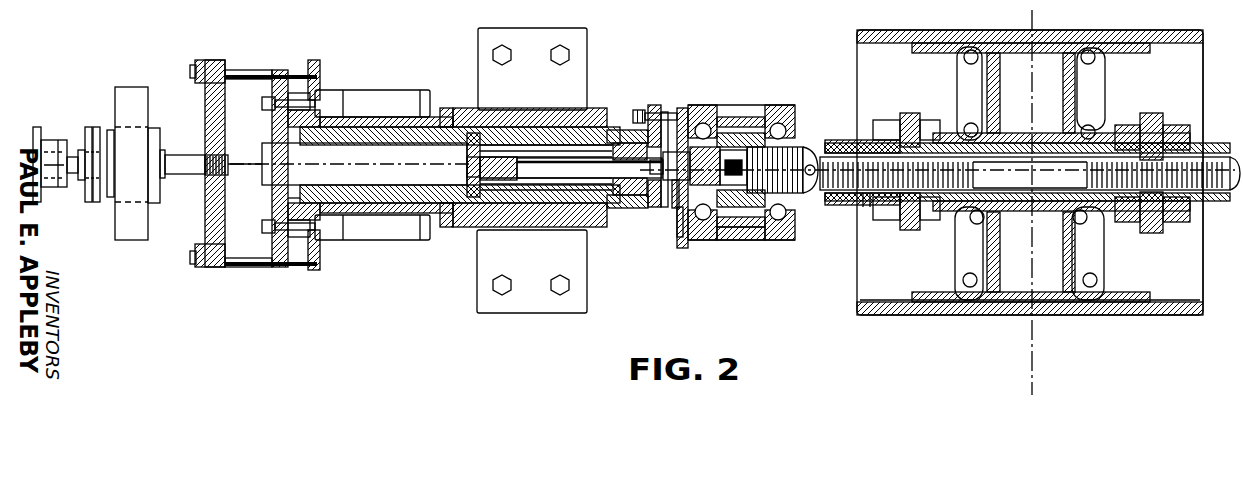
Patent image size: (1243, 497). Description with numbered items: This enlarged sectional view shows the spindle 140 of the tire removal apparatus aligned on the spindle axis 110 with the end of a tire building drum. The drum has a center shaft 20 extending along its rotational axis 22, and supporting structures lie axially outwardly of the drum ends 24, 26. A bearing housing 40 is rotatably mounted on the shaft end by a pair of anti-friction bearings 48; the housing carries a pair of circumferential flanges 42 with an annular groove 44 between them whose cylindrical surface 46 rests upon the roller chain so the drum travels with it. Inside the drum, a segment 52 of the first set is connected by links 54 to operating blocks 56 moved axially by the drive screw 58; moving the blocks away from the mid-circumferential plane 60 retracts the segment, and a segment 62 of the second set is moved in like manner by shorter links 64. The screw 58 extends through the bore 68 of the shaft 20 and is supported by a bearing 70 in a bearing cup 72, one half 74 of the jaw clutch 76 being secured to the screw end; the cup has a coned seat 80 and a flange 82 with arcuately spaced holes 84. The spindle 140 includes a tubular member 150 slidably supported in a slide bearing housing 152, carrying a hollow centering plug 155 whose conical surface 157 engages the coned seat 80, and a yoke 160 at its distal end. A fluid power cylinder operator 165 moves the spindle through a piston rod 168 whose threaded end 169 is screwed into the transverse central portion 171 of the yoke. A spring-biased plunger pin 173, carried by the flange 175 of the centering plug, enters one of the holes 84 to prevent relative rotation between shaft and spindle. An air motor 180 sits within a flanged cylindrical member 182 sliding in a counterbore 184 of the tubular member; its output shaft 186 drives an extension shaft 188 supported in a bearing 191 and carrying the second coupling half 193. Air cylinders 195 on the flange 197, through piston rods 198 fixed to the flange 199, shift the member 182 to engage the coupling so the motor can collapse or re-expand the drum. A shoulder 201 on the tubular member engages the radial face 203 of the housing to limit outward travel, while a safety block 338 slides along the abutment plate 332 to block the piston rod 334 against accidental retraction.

The center shaft 20 is at (843, 141).
The rotational axis 22 is at (872, 168).
The drum end 24 is at (1207, 47).
The drum end 26 is at (857, 45).
The bearing housing 40 is at (700, 105).
The circumferential flanges 42 is at (777, 103).
The annular groove 44 is at (753, 233).
The cylindrical surface 46 is at (743, 230).
The anti-friction bearings 48 is at (700, 240).
The segment 52 is at (907, 33).
The links 54 is at (982, 67).
The operating blocks 56 is at (907, 115).
The drive screw 58 is at (972, 170).
The mid-circumferential plane 60 is at (1032, 378).
The segment 62 is at (893, 315).
The links 64 is at (968, 290).
The bore 68 is at (870, 193).
The bearing 70 is at (795, 147).
The bearing cup 72 is at (677, 207).
The jaw clutch half 74 is at (723, 207).
The jaw clutch 76 is at (697, 153).
The coned seat 80 is at (657, 207).
The flange 82 is at (682, 237).
The holes 84 is at (682, 108).
The spindle axis 110 is at (253, 163).
The spindle 140 is at (407, 253).
The tubular member 150 is at (508, 133).
The slide bearing housing 152 is at (497, 297).
The centering plug 155 is at (653, 207).
The conical surface 157 is at (625, 140).
The yoke 160 is at (240, 68).
The fluid power cylinder operator 165 is at (110, 197).
The piston rod 168 is at (192, 167).
The threaded end 169 is at (207, 163).
The transverse central portion 171 is at (213, 223).
The spring-biased plunger pin 173 is at (650, 108).
The flange 175 is at (658, 105).
The air motor 180 is at (396, 168).
The flanged cylindrical member 182 is at (300, 198).
The counterbore 184 is at (393, 133).
The output shaft 186 is at (493, 167).
The extension shaft 188 is at (562, 175).
The bearing 191 is at (614, 153).
The coupling half 193 is at (614, 188).
The air cylinders 195 is at (362, 100).
The flange 197 is at (296, 100).
The piston rods 198 is at (296, 72).
The flange 199 is at (275, 72).
The shoulder 201 is at (447, 127).
The radial face 203 is at (443, 125).
The abutment plate 332 is at (33, 128).
The piston rod 334 is at (85, 170).
The safety block 338 is at (50, 143).